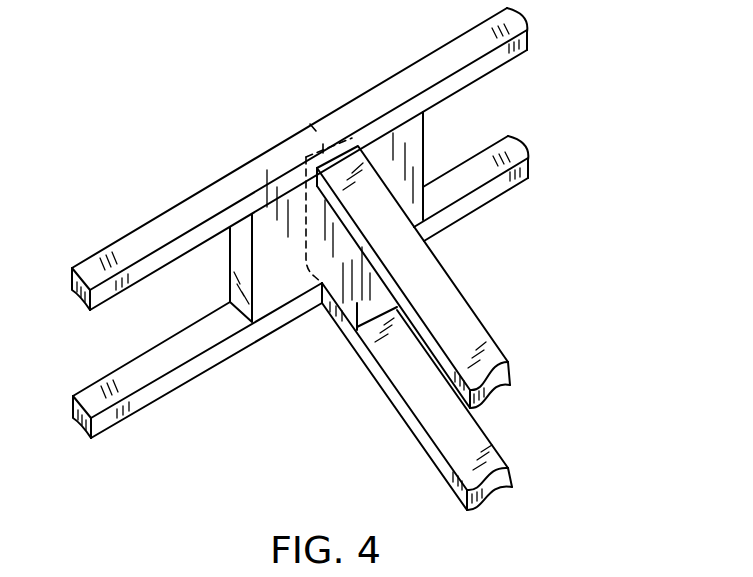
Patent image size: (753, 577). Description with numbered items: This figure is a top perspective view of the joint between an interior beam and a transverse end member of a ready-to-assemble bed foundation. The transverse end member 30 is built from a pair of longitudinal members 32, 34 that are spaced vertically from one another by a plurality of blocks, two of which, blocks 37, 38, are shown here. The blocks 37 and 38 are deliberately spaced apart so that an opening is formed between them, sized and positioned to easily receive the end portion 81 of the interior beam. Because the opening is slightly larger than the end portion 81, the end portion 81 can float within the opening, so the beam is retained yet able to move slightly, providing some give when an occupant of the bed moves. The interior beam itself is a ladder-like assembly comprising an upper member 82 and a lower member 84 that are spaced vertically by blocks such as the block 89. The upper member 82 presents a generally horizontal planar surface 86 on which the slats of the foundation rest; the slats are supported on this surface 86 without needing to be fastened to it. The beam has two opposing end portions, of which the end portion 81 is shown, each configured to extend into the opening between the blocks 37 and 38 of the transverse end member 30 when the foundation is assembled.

The transverse end member 30 is at (153, 121).
The longitudinal member 32 is at (462, 43).
The longitudinal member 34 is at (462, 183).
The block 37 is at (418, 134).
The block 38 is at (243, 267).
The end portion 81 is at (309, 124).
The upper member 82 is at (491, 264).
The lower member 84 is at (460, 446).
The horizontal planar surface 86 is at (476, 339).
The block 89 is at (337, 292).